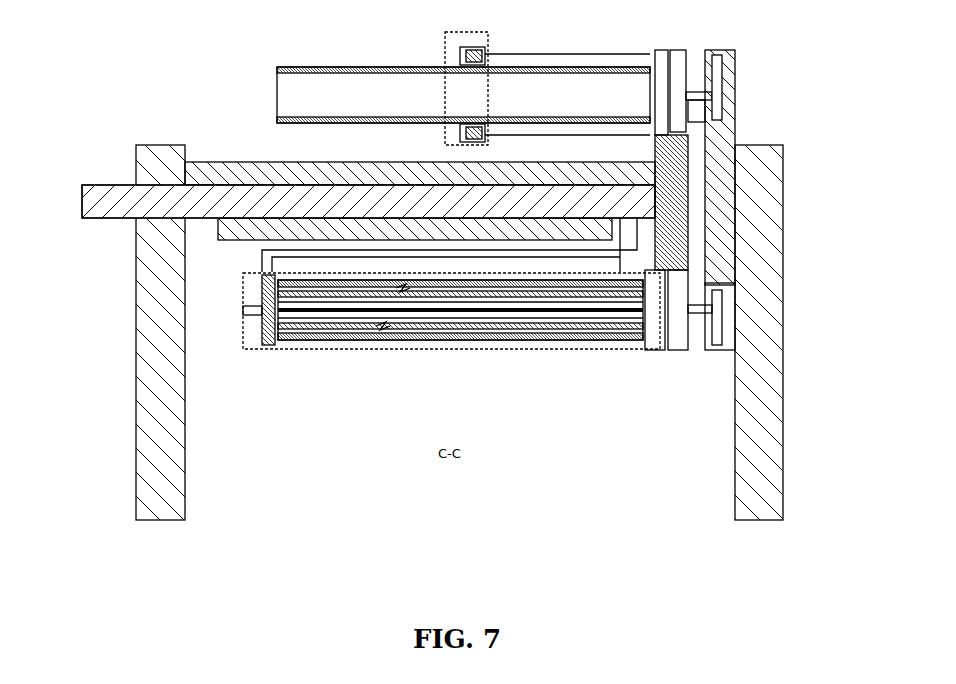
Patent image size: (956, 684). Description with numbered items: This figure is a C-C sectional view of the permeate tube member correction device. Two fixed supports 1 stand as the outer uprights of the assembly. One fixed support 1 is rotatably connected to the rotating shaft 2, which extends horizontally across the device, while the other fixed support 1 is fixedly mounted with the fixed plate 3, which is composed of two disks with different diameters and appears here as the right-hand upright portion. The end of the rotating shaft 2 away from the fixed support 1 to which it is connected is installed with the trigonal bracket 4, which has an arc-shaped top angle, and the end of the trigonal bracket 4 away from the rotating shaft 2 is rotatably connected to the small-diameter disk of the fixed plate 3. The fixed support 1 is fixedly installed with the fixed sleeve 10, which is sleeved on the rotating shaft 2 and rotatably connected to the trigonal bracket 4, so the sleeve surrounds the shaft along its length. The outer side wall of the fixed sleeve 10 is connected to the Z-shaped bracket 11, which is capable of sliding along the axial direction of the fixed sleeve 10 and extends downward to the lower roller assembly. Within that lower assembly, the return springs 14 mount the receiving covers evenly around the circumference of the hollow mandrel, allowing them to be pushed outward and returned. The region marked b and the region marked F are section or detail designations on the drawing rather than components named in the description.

The fixed support 1 is at (155, 300).
The rotating shaft 2 is at (116, 209).
The fixed plate 3 is at (718, 208).
The trigonal bracket 4 is at (686, 157).
The fixed sleeve 10 is at (222, 176).
The Z-shaped bracket 11 is at (349, 255).
The return spring 14 is at (382, 330).
The lower roller tube b is at (297, 350).
The upper roller assembly F is at (445, 48).